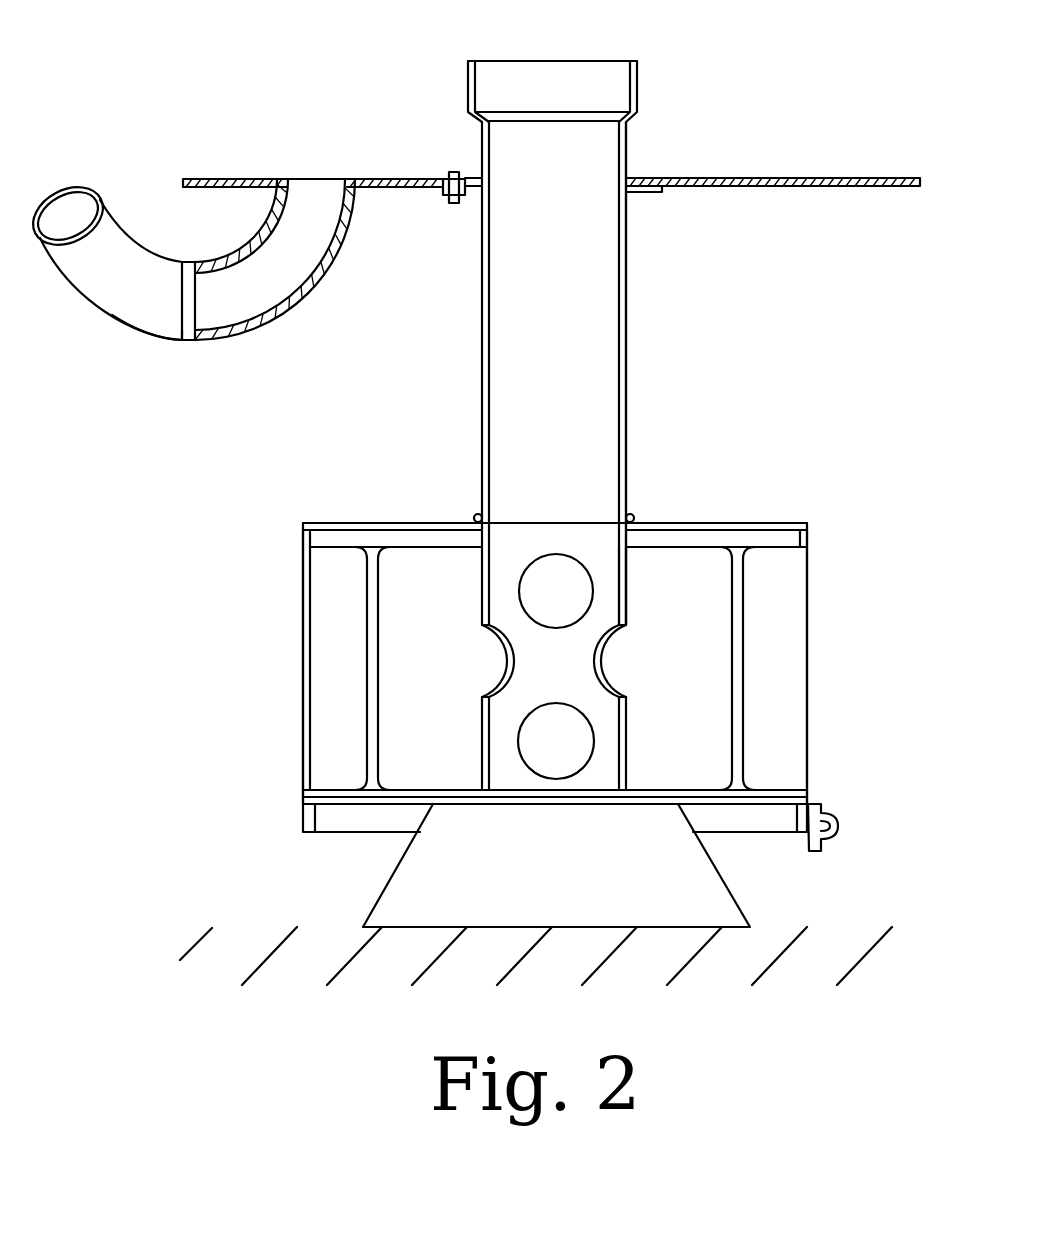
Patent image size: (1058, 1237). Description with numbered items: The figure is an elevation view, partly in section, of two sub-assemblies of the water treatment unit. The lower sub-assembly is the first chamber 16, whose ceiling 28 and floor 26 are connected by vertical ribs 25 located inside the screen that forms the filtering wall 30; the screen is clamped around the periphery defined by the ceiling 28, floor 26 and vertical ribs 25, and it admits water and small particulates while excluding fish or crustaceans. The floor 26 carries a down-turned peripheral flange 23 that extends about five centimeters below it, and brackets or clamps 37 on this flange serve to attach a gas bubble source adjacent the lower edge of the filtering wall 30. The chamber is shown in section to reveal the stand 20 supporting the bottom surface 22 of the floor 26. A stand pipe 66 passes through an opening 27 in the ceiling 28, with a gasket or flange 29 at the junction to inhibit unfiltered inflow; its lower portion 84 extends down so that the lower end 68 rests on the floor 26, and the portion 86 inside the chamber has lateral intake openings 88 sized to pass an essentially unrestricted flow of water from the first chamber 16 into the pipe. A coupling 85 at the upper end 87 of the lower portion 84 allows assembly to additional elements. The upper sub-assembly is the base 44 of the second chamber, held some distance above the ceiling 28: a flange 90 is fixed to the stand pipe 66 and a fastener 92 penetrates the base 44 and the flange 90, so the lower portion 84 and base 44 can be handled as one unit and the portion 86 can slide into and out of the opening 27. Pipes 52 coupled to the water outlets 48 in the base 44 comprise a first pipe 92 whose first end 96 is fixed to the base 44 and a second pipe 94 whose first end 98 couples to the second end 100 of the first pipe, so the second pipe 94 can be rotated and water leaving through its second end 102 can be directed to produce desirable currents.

The first chamber 16 is at (782, 671).
The stand 20 is at (718, 892).
The bottom surface 22 is at (397, 805).
The down-turned peripheral flange 23 is at (327, 823).
The vertical ribs 25 is at (743, 693).
The floor 26 is at (352, 800).
The opening 27 is at (634, 517).
The ceiling 28 is at (750, 523).
The gasket or flange 29 is at (476, 517).
The filtering wall 30 is at (303, 622).
The brackets or clamps 37 is at (838, 826).
The base 44 is at (785, 186).
The water outlets 48 is at (320, 180).
The pipes 52 is at (148, 323).
The stand pipe 66 is at (482, 335).
The lower end 68 is at (626, 795).
The lower portion 84 is at (626, 368).
The coupling 85 is at (637, 97).
The portion 86 is at (626, 585).
The upper end 87 is at (637, 61).
The lateral intake openings 88 is at (520, 593).
The flange 90 is at (645, 192).
The fastener 92 is at (455, 173).
The second pipe 94 is at (85, 285).
The first end 96 is at (352, 192).
The first end 98 is at (190, 343).
The second end 100 is at (190, 265).
The second end 102 is at (73, 207).